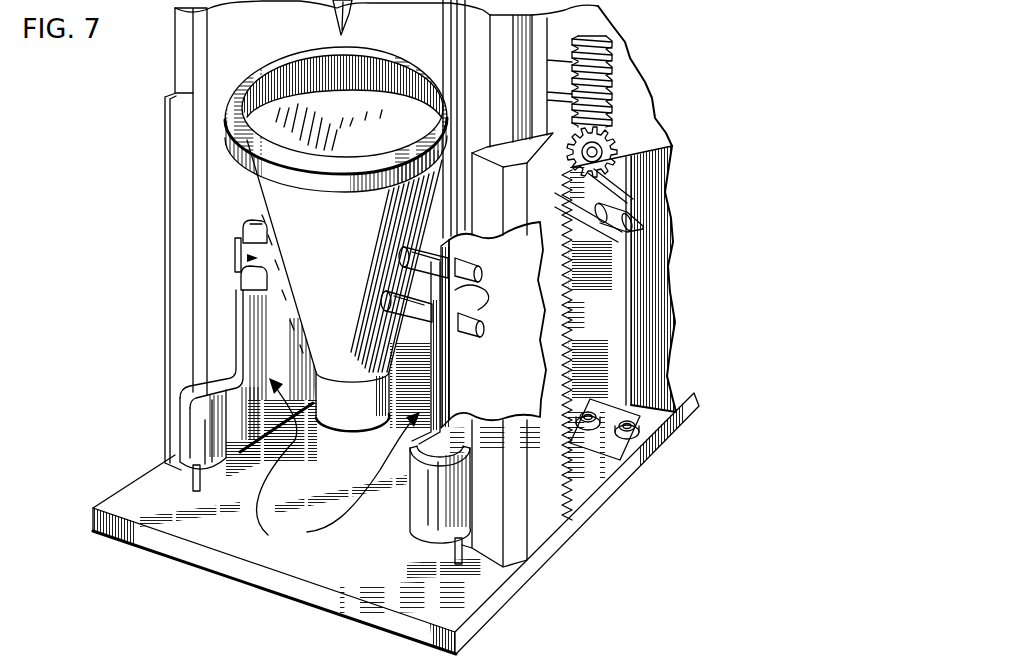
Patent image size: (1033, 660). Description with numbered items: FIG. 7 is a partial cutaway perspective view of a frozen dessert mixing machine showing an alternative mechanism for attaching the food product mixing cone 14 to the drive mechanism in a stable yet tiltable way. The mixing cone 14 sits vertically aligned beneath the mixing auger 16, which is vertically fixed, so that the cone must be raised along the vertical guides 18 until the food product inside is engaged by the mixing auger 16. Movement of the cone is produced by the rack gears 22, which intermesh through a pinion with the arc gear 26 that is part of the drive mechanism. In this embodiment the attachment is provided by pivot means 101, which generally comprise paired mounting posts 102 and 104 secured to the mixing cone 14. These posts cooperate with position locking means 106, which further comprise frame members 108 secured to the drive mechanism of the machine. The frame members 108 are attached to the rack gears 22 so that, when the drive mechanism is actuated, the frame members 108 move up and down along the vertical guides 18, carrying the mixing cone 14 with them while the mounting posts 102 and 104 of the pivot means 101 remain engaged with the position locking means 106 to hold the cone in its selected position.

The food product mixing cone 14 is at (248, 258).
The mixing auger 16 is at (348, 22).
The vertical guides 18 is at (178, 58).
The rack gears 22 is at (166, 128).
The arc gear 26 is at (652, 132).
The pivot means 101 is at (242, 262).
The mounting posts 102 is at (245, 287).
The mounting posts 104 is at (243, 225).
The position locking means 106 is at (338, 465).
The frame members 108 is at (192, 432).